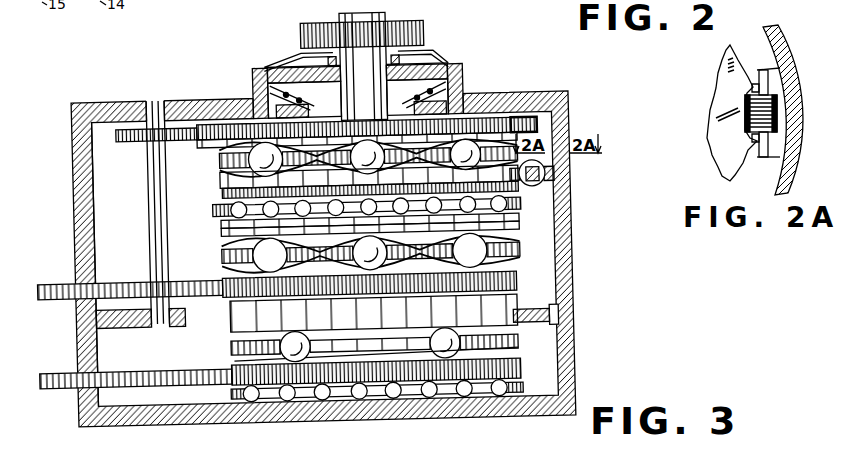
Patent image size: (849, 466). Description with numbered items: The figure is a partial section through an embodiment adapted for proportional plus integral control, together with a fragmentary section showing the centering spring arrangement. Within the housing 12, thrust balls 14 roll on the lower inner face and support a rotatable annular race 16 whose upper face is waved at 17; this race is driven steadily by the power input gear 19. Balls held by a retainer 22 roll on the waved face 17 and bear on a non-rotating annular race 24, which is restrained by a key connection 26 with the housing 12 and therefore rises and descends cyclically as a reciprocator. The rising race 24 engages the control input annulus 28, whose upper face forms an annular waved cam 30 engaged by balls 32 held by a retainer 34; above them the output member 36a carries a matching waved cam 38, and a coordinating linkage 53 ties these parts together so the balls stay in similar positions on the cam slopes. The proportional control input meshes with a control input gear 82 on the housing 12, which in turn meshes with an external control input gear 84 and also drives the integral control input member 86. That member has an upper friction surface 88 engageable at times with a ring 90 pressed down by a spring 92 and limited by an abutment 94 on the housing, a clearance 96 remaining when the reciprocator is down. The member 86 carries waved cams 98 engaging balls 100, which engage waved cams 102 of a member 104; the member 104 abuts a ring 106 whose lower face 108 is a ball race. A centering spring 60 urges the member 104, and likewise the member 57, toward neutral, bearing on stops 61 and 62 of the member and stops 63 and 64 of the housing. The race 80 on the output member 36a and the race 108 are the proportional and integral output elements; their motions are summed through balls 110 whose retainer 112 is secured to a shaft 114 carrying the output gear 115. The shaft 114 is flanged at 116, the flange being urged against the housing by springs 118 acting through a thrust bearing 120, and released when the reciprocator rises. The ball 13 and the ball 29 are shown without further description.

In FIG. 3, the housing 12 is at (578, 273).
In FIG. 2A, the housing 12 is at (790, 46).
In FIG. 3, the ball 13 is at (333, 397).
In FIG. 3, the thrust balls 14 is at (284, 400).
In FIG. 3, the rotatable annular race 16 is at (523, 370).
In FIG. 3, the waved upper face 17 is at (405, 352).
In FIG. 3, the power input gear 19 is at (69, 371).
In FIG. 3, the retainer 22 is at (516, 343).
In FIG. 3, the non-rotating annular race 24 is at (369, 321).
In FIG. 3, the key connection 26 is at (556, 327).
In FIG. 3, the control input annulus 28 is at (333, 280).
In FIG. 3, the ball 29 is at (294, 338).
In FIG. 3, the annular waved cam 30 is at (398, 264).
In FIG. 3, the balls 32 is at (277, 261).
In FIG. 3, the retainer 34 is at (512, 252).
In FIG. 3, the output member 36a is at (327, 240).
In FIG. 3, the annular waved cam 38 is at (438, 242).
In FIG. 3, the coordinating linkage 53 is at (222, 158).
In FIG. 2A, the member 57 is at (710, 123).
In FIG. 3, the centering spring 60 is at (548, 177).
In FIG. 2A, the centering spring 60 is at (778, 108).
In FIG. 2A, the stop 61 is at (752, 88).
In FIG. 2A, the stop 62 is at (752, 138).
In FIG. 2A, the stop 63 is at (770, 69).
In FIG. 2A, the stop 64 is at (775, 154).
In FIG. 3, the annular ball race 80 is at (258, 240).
In FIG. 3, the control input gear 82 is at (144, 283).
In FIG. 3, the external control input gear 84 is at (63, 300).
In FIG. 3, the integral control input member 86 is at (538, 128).
In FIG. 3, the upper friction surface 88 is at (511, 128).
In FIG. 3, the ring 90 is at (425, 106).
In FIG. 3, the spring 92 is at (470, 93).
In FIG. 3, the abutment 94 is at (268, 113).
In FIG. 3, the clearance 96 is at (314, 104).
In FIG. 3, the waved cams 98 is at (211, 148).
In FIG. 3, the balls 100 is at (388, 167).
In FIG. 3, the waved cams 102 is at (212, 184).
In FIG. 3, the member 104 is at (331, 185).
In FIG. 2A, the member 104 is at (712, 102).
In FIG. 3, the ring 106 is at (222, 196).
In FIG. 3, the lower face 108 is at (346, 198).
In FIG. 3, the balls 110 is at (506, 207).
In FIG. 3, the retainer 112 is at (214, 211).
In FIG. 3, the shaft 114 is at (342, 90).
In FIG. 3, the gear 115 is at (302, 35).
In FIG. 3, the flange 116 is at (350, 60).
In FIG. 3, the springs 118 is at (436, 60).
In FIG. 3, the thrust bearing 120 is at (402, 52).